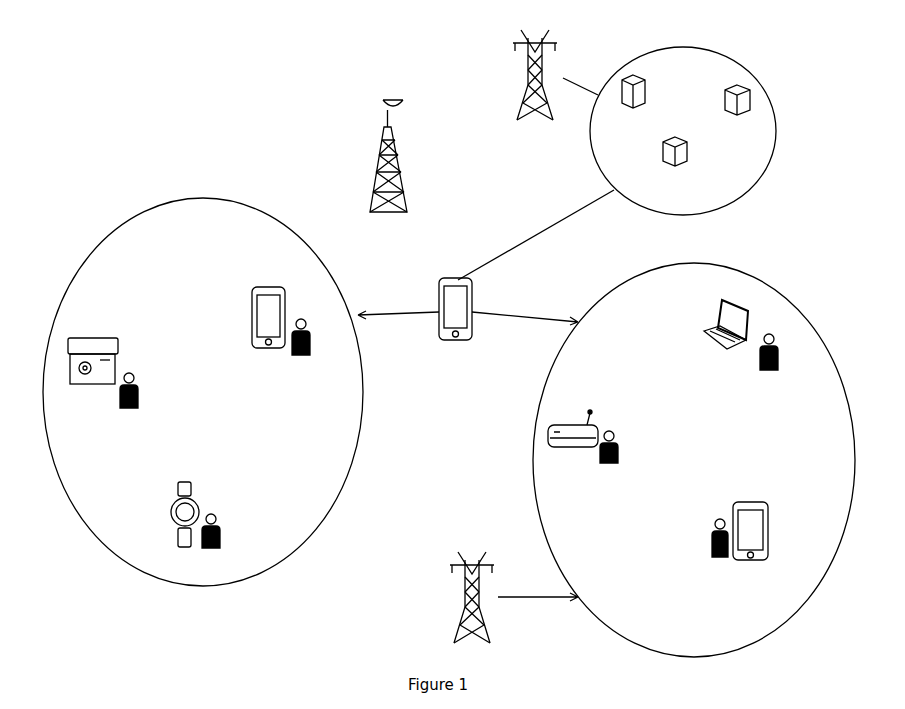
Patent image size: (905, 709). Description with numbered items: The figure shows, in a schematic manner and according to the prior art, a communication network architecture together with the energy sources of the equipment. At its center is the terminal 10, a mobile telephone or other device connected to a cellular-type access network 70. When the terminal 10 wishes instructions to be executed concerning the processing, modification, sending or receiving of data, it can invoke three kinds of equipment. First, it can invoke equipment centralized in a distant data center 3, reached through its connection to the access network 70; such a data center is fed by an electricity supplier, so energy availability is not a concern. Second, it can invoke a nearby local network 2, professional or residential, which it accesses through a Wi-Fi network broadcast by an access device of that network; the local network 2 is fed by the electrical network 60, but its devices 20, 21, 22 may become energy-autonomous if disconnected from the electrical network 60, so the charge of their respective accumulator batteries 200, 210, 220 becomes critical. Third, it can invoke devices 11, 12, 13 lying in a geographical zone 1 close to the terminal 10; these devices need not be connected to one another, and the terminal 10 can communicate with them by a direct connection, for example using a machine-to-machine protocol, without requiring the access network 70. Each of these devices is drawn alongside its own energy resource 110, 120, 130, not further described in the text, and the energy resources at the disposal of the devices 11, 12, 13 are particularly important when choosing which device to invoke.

The geographical zone 1 is at (203, 392).
The local network 2 is at (694, 460).
The data center 3 is at (683, 131).
The terminal 10 is at (458, 341).
The device of the geographical zone 11 is at (265, 332).
The device of the geographical zone 12 is at (188, 548).
The device of the geographical zone 13 is at (92, 388).
The user of mobile phone 110 is at (321, 357).
The user of smart watch 120 is at (209, 544).
The user of camera 130 is at (150, 416).
The device of the local network 20 is at (568, 449).
The device of the local network 21 is at (704, 337).
The device of the local network 22 is at (752, 562).
The accumulator battery 200 is at (615, 461).
The accumulator battery 210 is at (777, 368).
The accumulator battery 220 is at (712, 545).
The electrical network 60 is at (503, 47).
The access network 70 is at (382, 141).